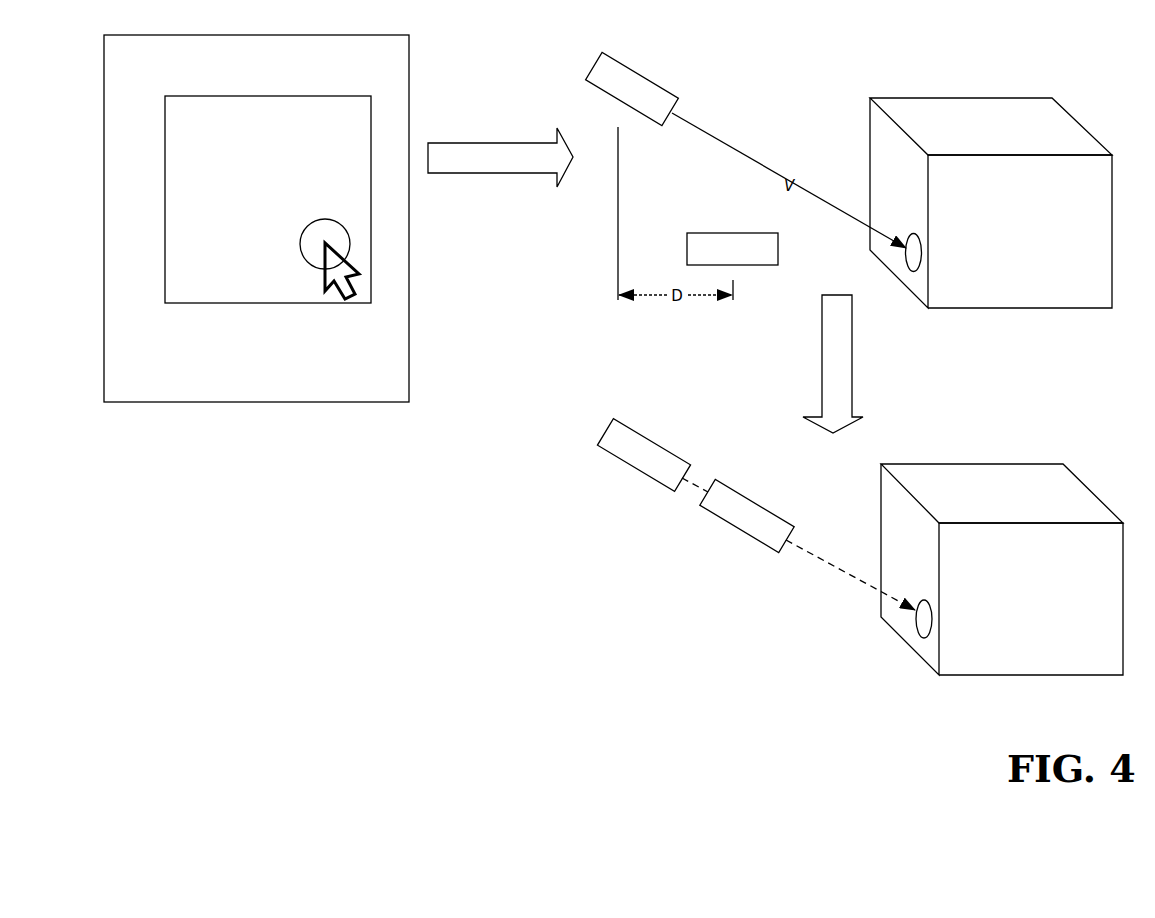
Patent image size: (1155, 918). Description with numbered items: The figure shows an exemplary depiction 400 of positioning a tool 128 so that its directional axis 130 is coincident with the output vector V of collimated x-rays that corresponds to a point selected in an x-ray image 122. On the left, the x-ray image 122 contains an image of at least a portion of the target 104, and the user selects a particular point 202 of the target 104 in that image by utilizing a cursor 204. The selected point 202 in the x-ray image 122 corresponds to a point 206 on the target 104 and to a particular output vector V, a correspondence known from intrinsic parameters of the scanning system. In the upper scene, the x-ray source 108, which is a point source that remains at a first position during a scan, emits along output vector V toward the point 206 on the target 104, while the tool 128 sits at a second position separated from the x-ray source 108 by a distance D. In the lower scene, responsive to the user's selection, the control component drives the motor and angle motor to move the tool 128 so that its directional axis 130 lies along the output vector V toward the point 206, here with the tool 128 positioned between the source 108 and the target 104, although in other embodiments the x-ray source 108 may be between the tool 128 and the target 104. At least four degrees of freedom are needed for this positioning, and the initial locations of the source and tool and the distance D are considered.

The target 104 is at (1010, 98).
The x-ray source 108 is at (640, 73).
The x-ray image 122 is at (409, 82).
The tool 128 is at (710, 233).
The directional axis 130 is at (843, 572).
The point 202 is at (348, 229).
The cursor 204 is at (357, 293).
The point on the target 206 is at (917, 268).
The exemplary depiction 400 is at (856, 61).